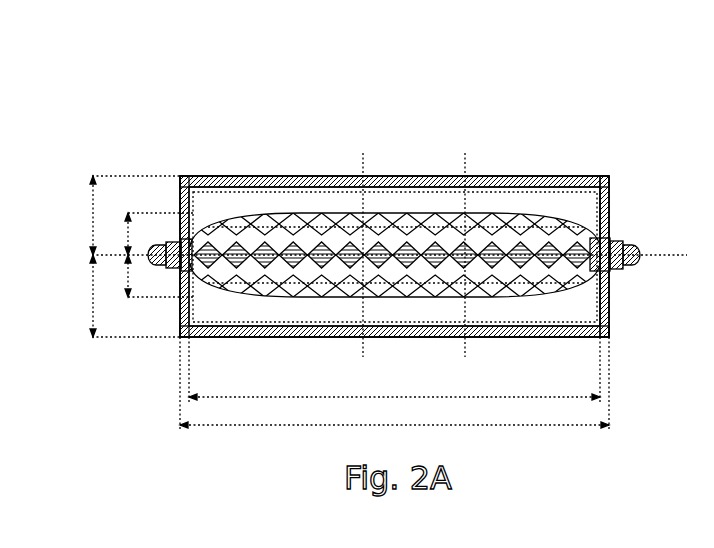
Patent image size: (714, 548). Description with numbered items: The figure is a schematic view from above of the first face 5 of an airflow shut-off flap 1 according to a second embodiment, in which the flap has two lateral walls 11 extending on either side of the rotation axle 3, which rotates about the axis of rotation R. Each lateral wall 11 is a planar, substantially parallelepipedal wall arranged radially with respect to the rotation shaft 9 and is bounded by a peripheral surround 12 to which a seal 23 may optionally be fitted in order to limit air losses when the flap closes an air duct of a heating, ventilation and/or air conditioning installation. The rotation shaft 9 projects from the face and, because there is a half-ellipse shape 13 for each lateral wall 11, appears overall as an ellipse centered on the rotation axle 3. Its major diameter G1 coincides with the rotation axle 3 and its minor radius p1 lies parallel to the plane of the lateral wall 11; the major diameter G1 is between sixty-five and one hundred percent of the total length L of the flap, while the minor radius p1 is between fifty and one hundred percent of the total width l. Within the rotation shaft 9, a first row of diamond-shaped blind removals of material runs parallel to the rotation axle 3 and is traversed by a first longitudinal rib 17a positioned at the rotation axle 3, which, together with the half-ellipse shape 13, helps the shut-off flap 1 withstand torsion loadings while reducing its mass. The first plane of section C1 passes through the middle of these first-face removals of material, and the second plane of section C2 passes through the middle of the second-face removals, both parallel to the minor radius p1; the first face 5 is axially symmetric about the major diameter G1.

The airflow shut-off flap 1 is at (638, 128).
The rotation axle 3 is at (618, 240).
The first face 5 is at (611, 313).
The rotation shaft 9 is at (393, 243).
The lateral wall 11 is at (575, 190).
The peripheral surround 12 is at (612, 188).
The half-ellipse shape 13 is at (307, 213).
The first longitudinal rib 17a is at (407, 227).
The seal 23 is at (540, 192).
The first plane of section C1 is at (467, 172).
The second plane of section C2 is at (365, 172).
The major diameter G1 is at (394, 379).
The total length L is at (394, 394).
The total width l is at (130, 256).
The minor radius p1 is at (150, 255).
The axis of rotation R is at (662, 257).